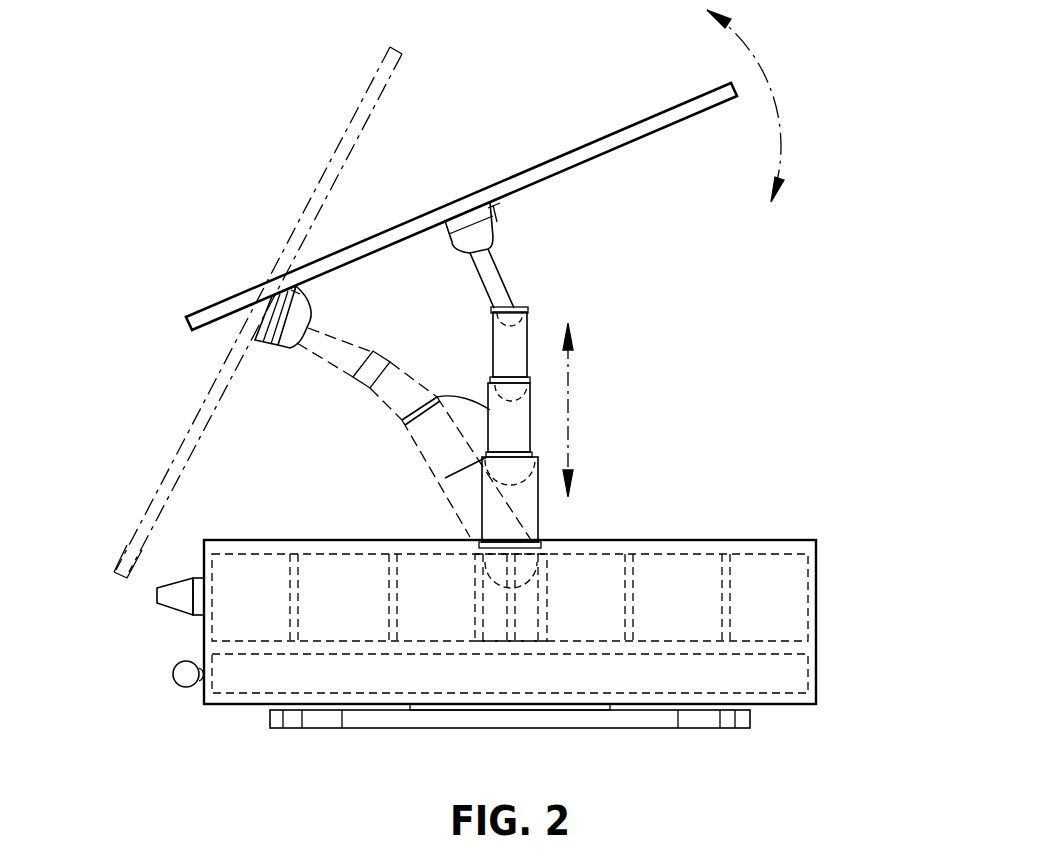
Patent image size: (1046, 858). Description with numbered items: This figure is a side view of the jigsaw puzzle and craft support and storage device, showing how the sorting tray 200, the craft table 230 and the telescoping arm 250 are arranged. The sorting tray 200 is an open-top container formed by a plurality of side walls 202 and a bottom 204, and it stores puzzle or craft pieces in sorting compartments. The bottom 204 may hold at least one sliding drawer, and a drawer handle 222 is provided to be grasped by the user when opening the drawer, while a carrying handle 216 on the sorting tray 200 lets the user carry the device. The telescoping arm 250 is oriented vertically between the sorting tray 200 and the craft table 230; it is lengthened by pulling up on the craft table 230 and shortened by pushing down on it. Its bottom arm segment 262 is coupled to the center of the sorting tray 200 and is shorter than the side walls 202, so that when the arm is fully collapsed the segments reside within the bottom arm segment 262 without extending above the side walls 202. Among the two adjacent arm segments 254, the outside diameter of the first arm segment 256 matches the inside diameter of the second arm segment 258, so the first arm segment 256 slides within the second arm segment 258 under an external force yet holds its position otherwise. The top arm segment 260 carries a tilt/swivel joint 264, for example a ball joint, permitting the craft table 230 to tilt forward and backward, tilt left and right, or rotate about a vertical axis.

The sorting tray 200 is at (153, 537).
The plurality of side walls 202 is at (698, 573).
The bottom 204 is at (845, 652).
The carrying handle 216 is at (180, 582).
The drawer handle 222 is at (186, 676).
The craft table 230 is at (185, 28).
The telescoping arm 250 is at (847, 208).
The two adjacent arm segments 254 is at (528, 358).
The first arm segment 256 is at (491, 341).
The second arm segment 258 is at (402, 420).
The top arm segment 260 is at (500, 269).
The bottom arm segment 262 is at (475, 608).
The tilt/swivel joint 264 is at (522, 306).